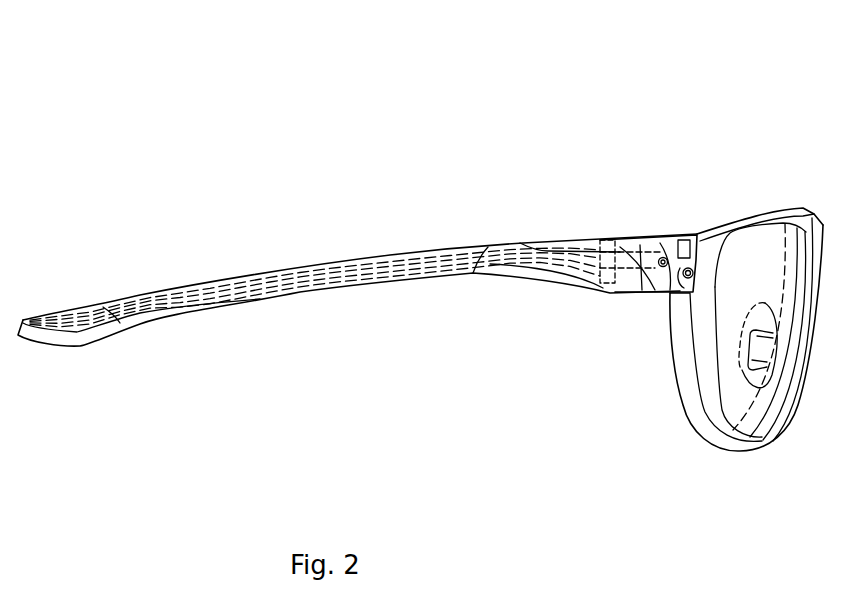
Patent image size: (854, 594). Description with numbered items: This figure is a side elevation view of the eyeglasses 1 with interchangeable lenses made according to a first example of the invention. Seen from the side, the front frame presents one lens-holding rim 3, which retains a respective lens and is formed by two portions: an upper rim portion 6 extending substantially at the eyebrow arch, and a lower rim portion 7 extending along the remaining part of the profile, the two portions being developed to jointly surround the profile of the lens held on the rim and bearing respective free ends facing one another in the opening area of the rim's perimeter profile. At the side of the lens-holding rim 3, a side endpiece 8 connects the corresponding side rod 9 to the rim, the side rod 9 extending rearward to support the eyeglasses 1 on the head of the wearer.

The eyeglasses 1 is at (781, 122).
The lens-holding rim 3 is at (799, 437).
The upper rim portion 6 is at (742, 232).
The lower rim portion 7 is at (688, 368).
The side endpiece 8 is at (668, 238).
The side rod 9 is at (350, 290).